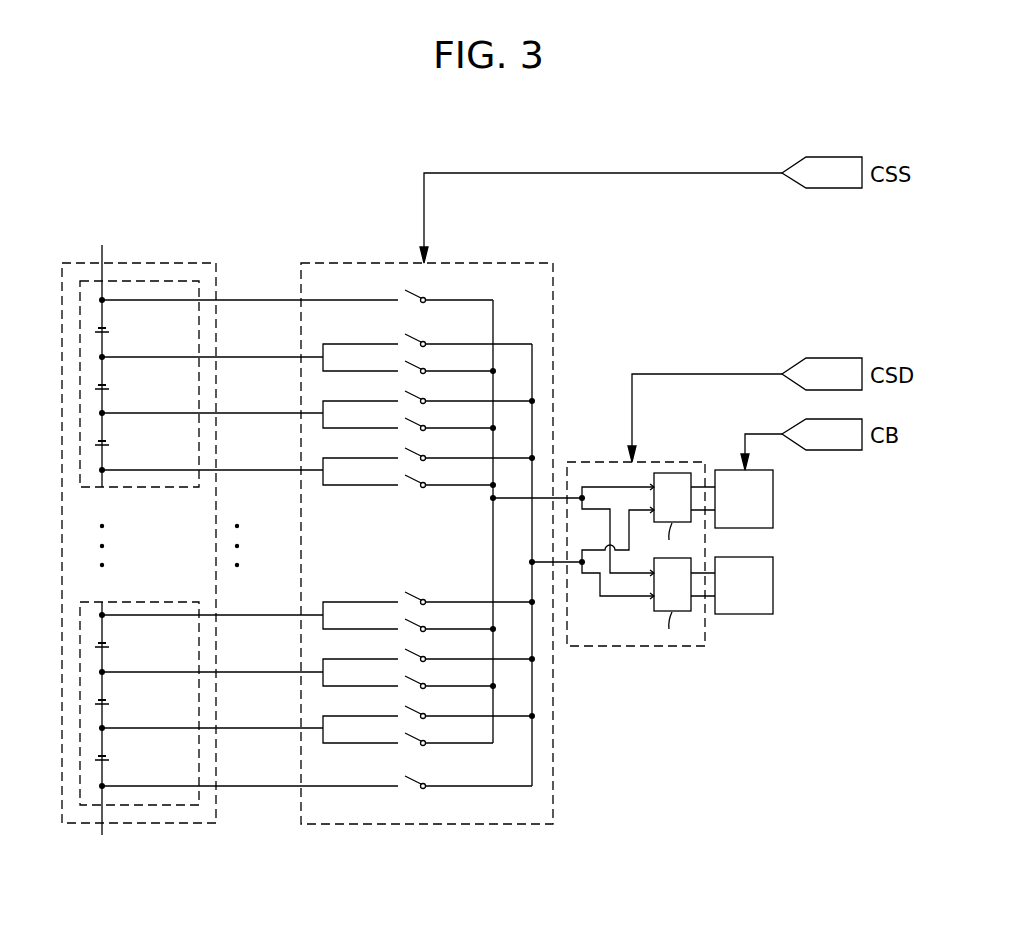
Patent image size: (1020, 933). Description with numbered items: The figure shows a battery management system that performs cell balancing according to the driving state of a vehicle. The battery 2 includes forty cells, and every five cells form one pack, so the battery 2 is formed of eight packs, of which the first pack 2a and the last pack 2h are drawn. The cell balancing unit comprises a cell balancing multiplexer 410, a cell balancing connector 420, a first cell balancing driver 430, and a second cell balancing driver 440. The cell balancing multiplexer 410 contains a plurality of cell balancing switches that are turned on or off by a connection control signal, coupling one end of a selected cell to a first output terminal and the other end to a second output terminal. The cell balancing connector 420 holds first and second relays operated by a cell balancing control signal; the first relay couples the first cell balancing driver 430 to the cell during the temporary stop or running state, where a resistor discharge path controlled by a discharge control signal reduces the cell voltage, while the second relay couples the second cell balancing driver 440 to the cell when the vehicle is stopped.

The battery 2 is at (169, 528).
The pack 2a is at (203, 289).
The pack 2h is at (200, 806).
The cell balancing multiplexer 410 is at (512, 260).
The cell balancing connector 420 is at (645, 647).
The first cell balancing driver 430 is at (774, 505).
The second cell balancing driver 440 is at (774, 592).